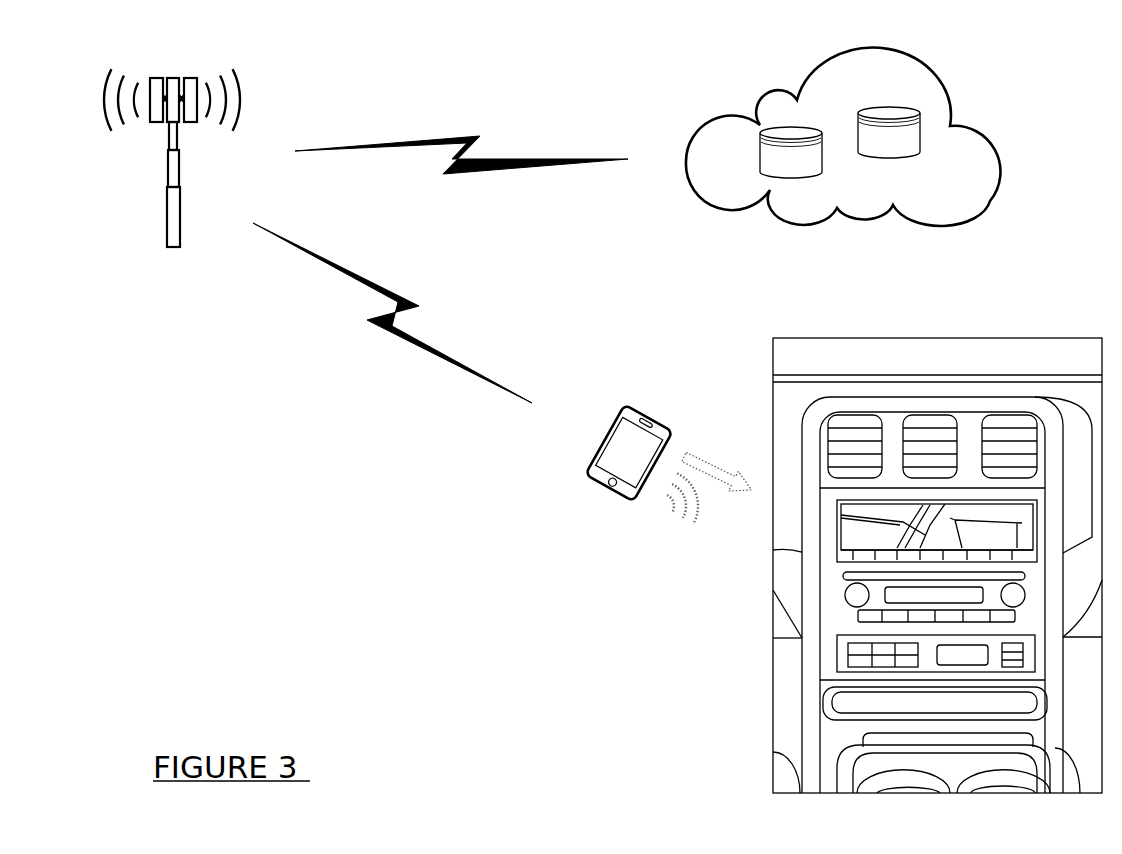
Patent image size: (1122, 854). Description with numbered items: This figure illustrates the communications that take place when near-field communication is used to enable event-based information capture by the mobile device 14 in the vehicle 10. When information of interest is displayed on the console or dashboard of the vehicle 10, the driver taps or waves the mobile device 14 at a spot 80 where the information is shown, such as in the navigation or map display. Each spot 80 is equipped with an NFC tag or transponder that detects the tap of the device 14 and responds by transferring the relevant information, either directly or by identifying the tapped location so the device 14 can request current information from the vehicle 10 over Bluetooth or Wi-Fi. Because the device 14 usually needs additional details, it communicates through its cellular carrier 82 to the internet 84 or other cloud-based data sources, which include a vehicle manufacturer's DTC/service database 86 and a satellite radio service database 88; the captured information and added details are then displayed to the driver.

The vehicle 10 is at (882, 565).
The mobile device 14 is at (586, 475).
The spot 80 is at (873, 533).
The cellular carrier 82 is at (166, 212).
The internet 84 is at (790, 217).
The DTC/service database 86 is at (791, 152).
The satellite radio service database 88 is at (889, 132).